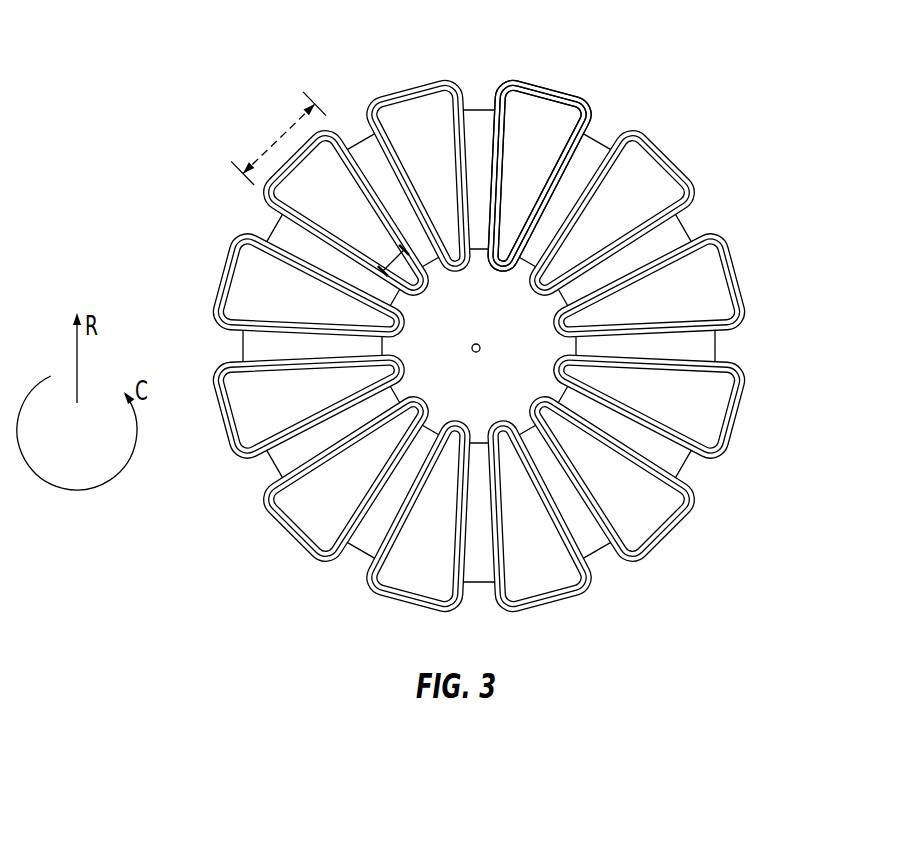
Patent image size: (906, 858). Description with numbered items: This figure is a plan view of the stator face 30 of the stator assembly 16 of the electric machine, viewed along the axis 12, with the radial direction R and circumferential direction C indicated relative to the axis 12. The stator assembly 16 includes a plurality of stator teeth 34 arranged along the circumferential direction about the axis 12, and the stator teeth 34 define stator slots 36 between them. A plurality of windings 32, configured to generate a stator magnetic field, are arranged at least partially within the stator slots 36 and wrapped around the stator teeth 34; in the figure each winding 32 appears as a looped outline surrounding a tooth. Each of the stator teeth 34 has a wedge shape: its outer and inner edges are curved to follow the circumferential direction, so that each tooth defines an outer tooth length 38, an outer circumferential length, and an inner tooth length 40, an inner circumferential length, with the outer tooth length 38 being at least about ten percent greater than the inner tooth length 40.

The axis 12 is at (479, 344).
The stator assembly 16 is at (718, 167).
The stator face 30 is at (557, 147).
The windings 32 is at (549, 88).
The stator teeth 34 is at (692, 294).
The stator slots 36 is at (483, 120).
The outer tooth length 38 is at (281, 141).
The inner tooth length 40 is at (392, 257).